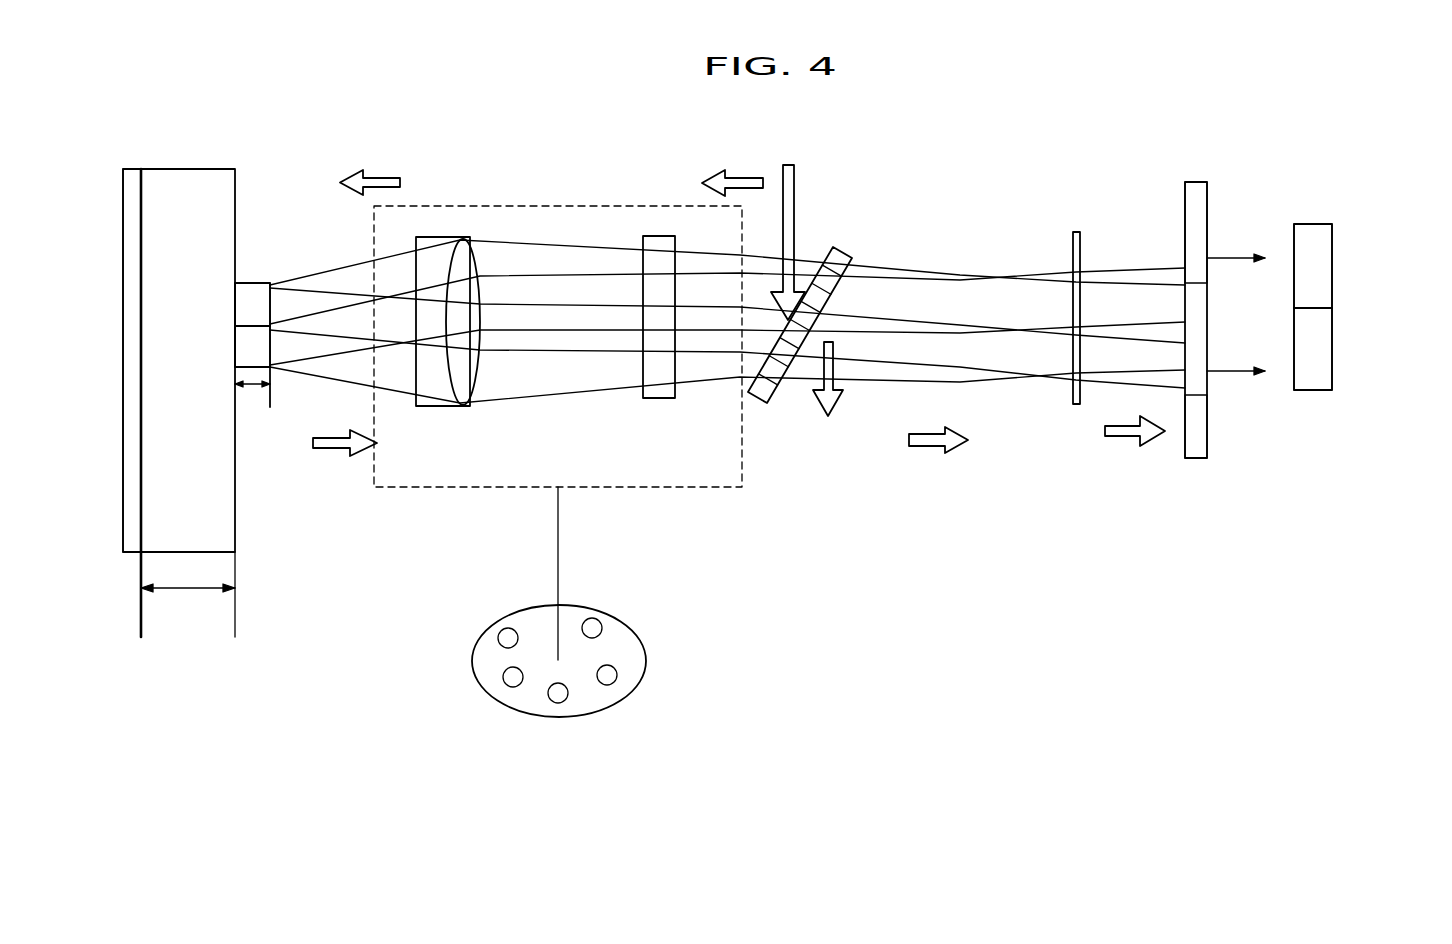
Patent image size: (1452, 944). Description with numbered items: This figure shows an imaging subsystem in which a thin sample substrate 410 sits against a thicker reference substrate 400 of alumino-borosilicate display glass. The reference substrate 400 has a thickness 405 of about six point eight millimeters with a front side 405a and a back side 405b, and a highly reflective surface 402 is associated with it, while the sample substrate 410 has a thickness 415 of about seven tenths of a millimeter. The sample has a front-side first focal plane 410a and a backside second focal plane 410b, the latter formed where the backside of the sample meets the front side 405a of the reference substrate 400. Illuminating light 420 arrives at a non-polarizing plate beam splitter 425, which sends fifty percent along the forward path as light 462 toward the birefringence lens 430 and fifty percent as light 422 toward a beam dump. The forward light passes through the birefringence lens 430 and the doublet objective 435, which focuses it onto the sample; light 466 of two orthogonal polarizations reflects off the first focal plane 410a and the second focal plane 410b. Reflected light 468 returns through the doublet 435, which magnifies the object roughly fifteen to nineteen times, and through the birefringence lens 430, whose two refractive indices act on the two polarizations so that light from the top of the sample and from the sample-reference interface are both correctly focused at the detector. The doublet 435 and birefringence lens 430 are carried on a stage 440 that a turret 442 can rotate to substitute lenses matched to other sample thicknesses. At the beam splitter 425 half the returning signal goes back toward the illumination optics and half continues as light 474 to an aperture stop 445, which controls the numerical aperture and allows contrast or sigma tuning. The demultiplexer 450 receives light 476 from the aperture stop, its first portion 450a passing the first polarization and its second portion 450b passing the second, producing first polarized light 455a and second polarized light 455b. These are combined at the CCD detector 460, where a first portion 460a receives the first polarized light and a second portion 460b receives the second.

The reference substrate 400 is at (213, 168).
The highly reflective surface 402 is at (130, 557).
The thickness of reference substrate 405 is at (187, 590).
The front side of reference substrate 405a is at (237, 530).
The back side of reference substrate 405b is at (145, 186).
The sample substrate 410 is at (255, 278).
The first focal plane 410a is at (272, 307).
The second focal plane 410b is at (242, 302).
The thickness of sample substrate 415 is at (253, 388).
The illuminating light 420 is at (797, 213).
The light directed toward beam dump 422 is at (840, 405).
The non-polarizing plate beam splitter 425 is at (757, 403).
The birefringence lens 430 is at (647, 400).
The doublet objective 435 is at (433, 407).
The stage 440 is at (412, 492).
The turret 442 is at (650, 660).
The aperture stop 445 is at (1073, 408).
The demultiplexer 450 is at (1193, 459).
The first portion of demultiplexer 450a is at (1200, 183).
The second portion of demultiplexer 450b is at (1210, 389).
The first polarized light 455a is at (1221, 255).
The second polarized light 455b is at (1221, 371).
The CCD detector 460 is at (1332, 245).
The first portion of image plane 460a is at (1313, 224).
The second portion of image plane 460b is at (1311, 390).
The forward-path illuminating light 462 is at (738, 173).
The light of two orthogonal polarizations 466 is at (383, 178).
The reflected light 468 is at (337, 450).
The reverse path light 474 is at (925, 448).
The light from aperture stop 476 is at (1123, 437).